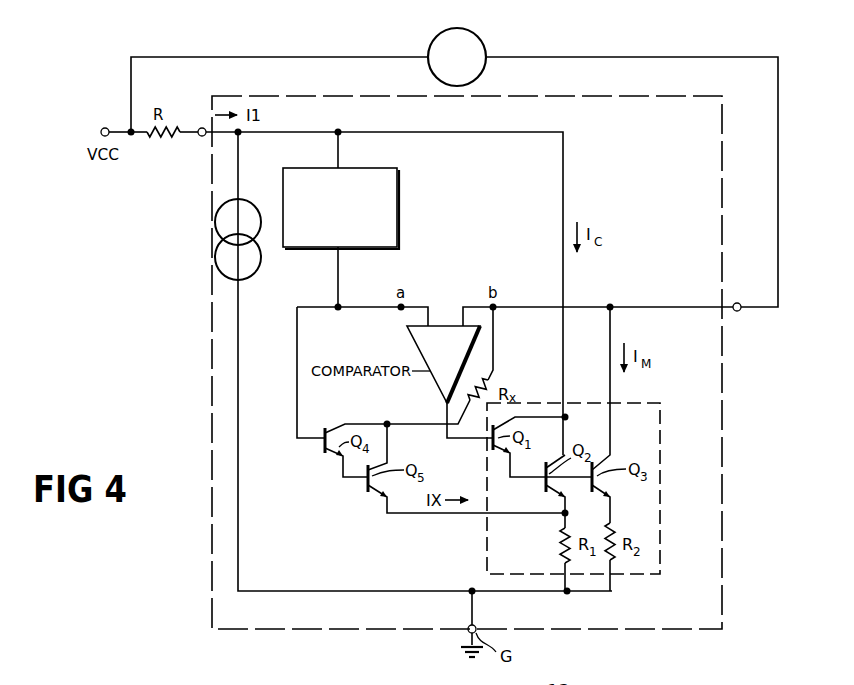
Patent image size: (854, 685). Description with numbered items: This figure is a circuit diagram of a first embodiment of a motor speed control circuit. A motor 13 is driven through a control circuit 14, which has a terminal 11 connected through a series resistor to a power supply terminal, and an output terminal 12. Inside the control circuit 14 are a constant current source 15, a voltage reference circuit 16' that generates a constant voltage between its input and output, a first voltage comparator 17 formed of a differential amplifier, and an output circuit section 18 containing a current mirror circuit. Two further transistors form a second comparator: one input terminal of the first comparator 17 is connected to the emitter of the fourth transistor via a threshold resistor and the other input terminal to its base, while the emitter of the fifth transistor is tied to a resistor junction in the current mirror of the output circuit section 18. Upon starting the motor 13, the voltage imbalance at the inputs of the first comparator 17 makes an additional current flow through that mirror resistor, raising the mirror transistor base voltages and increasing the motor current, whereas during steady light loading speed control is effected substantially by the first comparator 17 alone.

The terminal 11 is at (202, 136).
The output terminal 12 is at (739, 311).
The motor 13 is at (479, 36).
The control circuit 14 is at (732, 449).
The constant current source 15 is at (245, 200).
The voltage reference circuit 16' is at (341, 197).
The first voltage comparator 17 is at (409, 329).
The output circuit section 18 is at (660, 454).